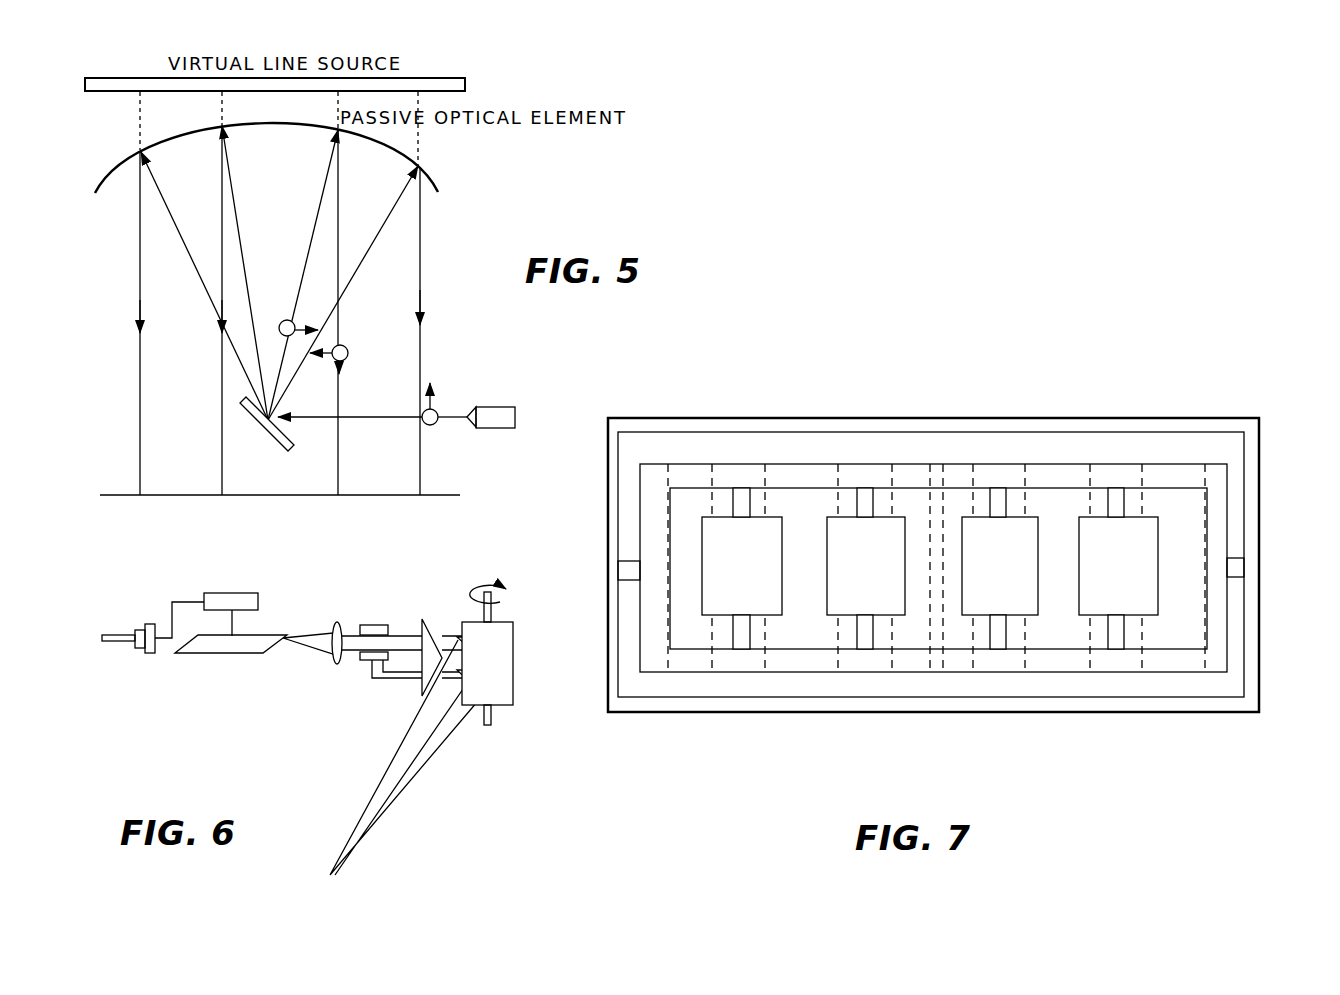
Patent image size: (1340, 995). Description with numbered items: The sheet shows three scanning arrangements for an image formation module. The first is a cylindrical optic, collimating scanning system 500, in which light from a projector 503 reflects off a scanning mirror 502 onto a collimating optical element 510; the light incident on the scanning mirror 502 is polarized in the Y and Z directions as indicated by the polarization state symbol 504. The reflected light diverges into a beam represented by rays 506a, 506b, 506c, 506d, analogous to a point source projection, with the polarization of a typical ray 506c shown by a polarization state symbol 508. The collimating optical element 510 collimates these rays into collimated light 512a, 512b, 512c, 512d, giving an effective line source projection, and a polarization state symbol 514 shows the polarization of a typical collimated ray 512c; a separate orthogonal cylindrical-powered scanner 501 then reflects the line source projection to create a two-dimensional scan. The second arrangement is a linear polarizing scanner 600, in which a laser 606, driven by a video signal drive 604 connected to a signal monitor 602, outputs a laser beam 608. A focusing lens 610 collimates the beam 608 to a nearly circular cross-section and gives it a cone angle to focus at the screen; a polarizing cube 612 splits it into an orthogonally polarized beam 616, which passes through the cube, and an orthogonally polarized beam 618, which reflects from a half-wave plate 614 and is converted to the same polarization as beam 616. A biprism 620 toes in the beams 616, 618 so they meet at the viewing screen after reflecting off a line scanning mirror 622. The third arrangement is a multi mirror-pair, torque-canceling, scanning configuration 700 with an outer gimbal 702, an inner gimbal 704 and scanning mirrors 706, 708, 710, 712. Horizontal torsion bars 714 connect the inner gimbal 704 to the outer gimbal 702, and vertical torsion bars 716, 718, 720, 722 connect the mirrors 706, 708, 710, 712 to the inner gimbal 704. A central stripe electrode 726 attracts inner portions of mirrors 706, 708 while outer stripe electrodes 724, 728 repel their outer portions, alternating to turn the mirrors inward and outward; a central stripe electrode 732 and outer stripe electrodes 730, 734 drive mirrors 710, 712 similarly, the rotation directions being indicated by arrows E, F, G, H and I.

In FIG. 5, the cylindrical optic, collimating scanning system 500 is at (460, 224).
In FIG. 5, the orthogonal cylindrical-powered scanner 501 is at (438, 494).
In FIG. 5, the scanning mirror 502 is at (262, 432).
In FIG. 5, the projector 503 is at (520, 407).
In FIG. 5, the polarization state symbol 504 is at (433, 403).
In FIG. 5, the ray 506a is at (173, 170).
In FIG. 5, the ray 506b is at (272, 150).
In FIG. 5, the ray 506c is at (322, 186).
In FIG. 5, the ray 506d is at (376, 232).
In FIG. 5, the polarization state symbol 508 is at (283, 320).
In FIG. 5, the collimating optical element 510 is at (122, 160).
In FIG. 5, the collimated light 512a is at (140, 233).
In FIG. 5, the collimated light 512b is at (220, 223).
In FIG. 5, the collimated light 512c is at (340, 168).
In FIG. 5, the collimated light 512d is at (373, 243).
In FIG. 5, the polarization state symbol 514 is at (341, 326).
In FIG. 6, the linear polarizing scanner 600 is at (214, 707).
In FIG. 6, the signal monitor 602 is at (135, 628).
In FIG. 6, the video signal drive 604 is at (221, 593).
In FIG. 6, the laser 606 is at (262, 635).
In FIG. 6, the laser beam 608 is at (313, 647).
In FIG. 6, the focusing lens 610 is at (330, 660).
In FIG. 6, the polarizing cube 612 is at (363, 625).
In FIG. 6, the half-wave plate 614 is at (355, 662).
In FIG. 6, the orthogonally polarized beam 616 is at (403, 640).
In FIG. 6, the orthogonally polarized beam 618 is at (402, 679).
In FIG. 6, the biprism 620 is at (430, 648).
In FIG. 6, the line scanning mirror 622 is at (513, 690).
In FIG. 7, the multi mirror-pair, torque-canceling, scanning configuration 700 is at (1247, 399).
In FIG. 7, the outer gimbal 702 is at (1217, 713).
In FIG. 7, the inner gimbal 704 is at (1218, 493).
In FIG. 7, the scanning mirror 706 is at (745, 558).
In FIG. 7, the scanning mirror 708 is at (870, 563).
In FIG. 7, the scanning mirror 710 is at (1003, 552).
In FIG. 7, the scanning mirror 712 is at (1123, 560).
In FIG. 7, the horizontal torsion bars 714 is at (627, 577).
In FIG. 7, the vertical torsion bars 716 is at (738, 487).
In FIG. 7, the vertical torsion bars 718 is at (865, 497).
In FIG. 7, the vertical torsion bars 720 is at (998, 497).
In FIG. 7, the vertical torsion bars 722 is at (1113, 495).
In FIG. 7, the outer stripe electrode 724 is at (688, 667).
In FIG. 7, the central stripe electrode 726 is at (802, 668).
In FIG. 7, the outer stripe electrode 728 is at (915, 663).
In FIG. 7, the outer stripe electrode 730 is at (960, 665).
In FIG. 7, the central stripe electrode 732 is at (1060, 663).
In FIG. 7, the outer stripe electrode 734 is at (1167, 663).
In FIG. 7, the rotation direction E is at (758, 398).
In FIG. 7, the rotation direction F is at (852, 398).
In FIG. 7, the rotation direction G is at (1008, 398).
In FIG. 7, the rotation direction H is at (1102, 398).
In FIG. 7, the rotation direction I is at (1284, 589).